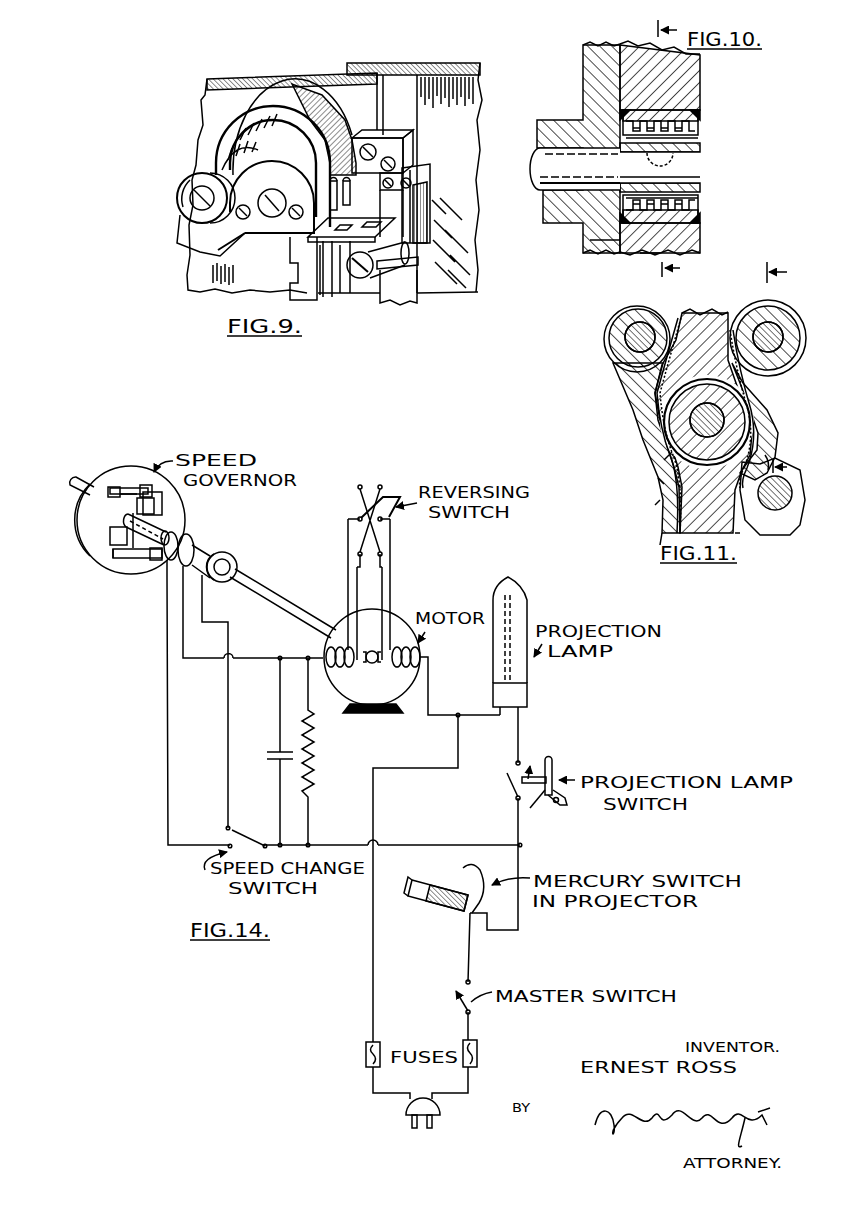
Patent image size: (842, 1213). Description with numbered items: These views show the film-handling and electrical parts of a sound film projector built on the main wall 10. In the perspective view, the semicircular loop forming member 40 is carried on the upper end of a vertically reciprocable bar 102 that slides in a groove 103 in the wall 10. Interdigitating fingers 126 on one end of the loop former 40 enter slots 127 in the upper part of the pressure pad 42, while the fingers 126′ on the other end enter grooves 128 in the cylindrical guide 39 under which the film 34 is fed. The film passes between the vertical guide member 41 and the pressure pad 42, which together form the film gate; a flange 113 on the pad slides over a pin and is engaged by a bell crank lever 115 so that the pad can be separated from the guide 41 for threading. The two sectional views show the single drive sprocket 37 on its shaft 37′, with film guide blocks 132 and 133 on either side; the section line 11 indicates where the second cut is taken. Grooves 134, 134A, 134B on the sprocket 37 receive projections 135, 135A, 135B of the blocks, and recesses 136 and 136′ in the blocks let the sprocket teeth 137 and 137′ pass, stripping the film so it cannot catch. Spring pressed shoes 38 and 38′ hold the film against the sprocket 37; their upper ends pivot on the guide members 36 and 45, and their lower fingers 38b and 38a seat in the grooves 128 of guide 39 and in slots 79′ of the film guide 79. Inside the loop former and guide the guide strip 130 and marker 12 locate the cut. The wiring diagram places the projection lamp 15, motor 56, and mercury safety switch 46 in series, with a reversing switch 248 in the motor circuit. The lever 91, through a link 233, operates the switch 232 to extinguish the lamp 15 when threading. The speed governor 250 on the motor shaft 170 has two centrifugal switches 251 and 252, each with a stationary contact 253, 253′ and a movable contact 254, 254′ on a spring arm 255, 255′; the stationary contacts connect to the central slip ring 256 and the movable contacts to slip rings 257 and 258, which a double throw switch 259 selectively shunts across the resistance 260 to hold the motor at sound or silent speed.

In FIG. 9, the main wall 10 is at (292, 77).
In FIG. 10, the main wall 10 is at (590, 238).
In FIG. 9, the groove 103 is at (415, 66).
In FIG. 9, the loop forming member 40 is at (347, 157).
In FIG. 9, the grooves 128 is at (240, 178).
In FIG. 11, the grooves 128 is at (790, 535).
In FIG. 9, the interdigitating fingers 126′ is at (220, 157).
In FIG. 9, the cylindrical guide 39 is at (183, 207).
In FIG. 11, the cylindrical guide 39 is at (773, 526).
In FIG. 9, the interdigitating fingers 126 is at (334, 200).
In FIG. 9, the slots 127 is at (327, 227).
In FIG. 9, the vertical guide member 41 is at (292, 275).
In FIG. 9, the flange 113 is at (370, 260).
In FIG. 9, the bell crank lever 115 is at (397, 272).
In FIG. 9, the vertically reciprocable bar 102 is at (398, 304).
In FIG. 9, the pressure pad 42 is at (335, 283).
In FIG. 10, the film guide block 132 is at (690, 75).
In FIG. 11, the film guide block 132 is at (703, 332).
In FIG. 10, the teeth 137 is at (700, 241).
In FIG. 10, the groove 134 is at (700, 113).
In FIG. 10, the groove 134A is at (700, 121).
In FIG. 10, the groove 134B is at (700, 130).
In FIG. 10, the recess 136 is at (700, 107).
In FIG. 10, the projection 135 is at (700, 197).
In FIG. 10, the projection 135A is at (700, 205).
In FIG. 10, the projection 135B is at (700, 213).
In FIG. 10, the recess 136′ is at (700, 223).
In FIG. 10, the drive sprocket 37 is at (698, 144).
In FIG. 11, the drive sprocket 37 is at (667, 460).
In FIG. 10, the sprocket shaft 37′ is at (531, 181).
In FIG. 11, the sprocket shaft 37′ is at (697, 427).
In FIG. 10, the teeth 137′ is at (627, 232).
In FIG. 10, the film guide block 133 is at (648, 253).
In FIG. 11, the film guide block 133 is at (736, 534).
In FIG. 10, the section line 11 is at (674, 152).
In FIG. 11, the spring pressed shoe 38 is at (636, 425).
In FIG. 11, the spring pressed shoe 38′ is at (777, 424).
In FIG. 11, the cylindrical guide 45 is at (604, 339).
In FIG. 11, the guide piece 36 is at (782, 310).
In FIG. 11, the film 34 is at (677, 317).
In FIG. 11, the guide strip 130 is at (655, 490).
In FIG. 11, the interdigitating fingers 38a is at (660, 480).
In FIG. 11, the slots 79′ is at (656, 505).
In FIG. 11, the film guide 79 is at (660, 536).
In FIG. 11, the interdigitating fingers 38b is at (770, 458).
In FIG. 11, the section line 12 is at (781, 373).
In FIG. 14, the speed governor 250 is at (82, 565).
In FIG. 14, the centrifugally operated switch 251 is at (143, 485).
In FIG. 14, the spring arm 255 is at (140, 486).
In FIG. 14, the stationary contact 253 is at (156, 506).
In FIG. 14, the movable contact 254 is at (137, 503).
In FIG. 14, the stationary contact 253′ is at (110, 536).
In FIG. 14, the centrifugally operated switch 252 is at (128, 560).
In FIG. 14, the movable contact 254′ is at (112, 558).
In FIG. 14, the spring arm 255′ is at (154, 561).
In FIG. 14, the slip ring 257 is at (177, 538).
In FIG. 14, the slip ring 256 is at (194, 548).
In FIG. 14, the slip ring 258 is at (237, 567).
In FIG. 14, the motor shaft 170 is at (293, 605).
In FIG. 14, the double throw switch 259 is at (252, 833).
In FIG. 14, the resistance 260 is at (313, 771).
In FIG. 14, the reversing switch 248 is at (391, 495).
In FIG. 14, the motor 56 is at (395, 627).
In FIG. 14, the projection lamp 15 is at (522, 608).
In FIG. 14, the switch 232 is at (510, 778).
In FIG. 14, the lever 91 is at (553, 768).
In FIG. 14, the link 233 is at (542, 807).
In FIG. 14, the safety switch 46 is at (448, 893).